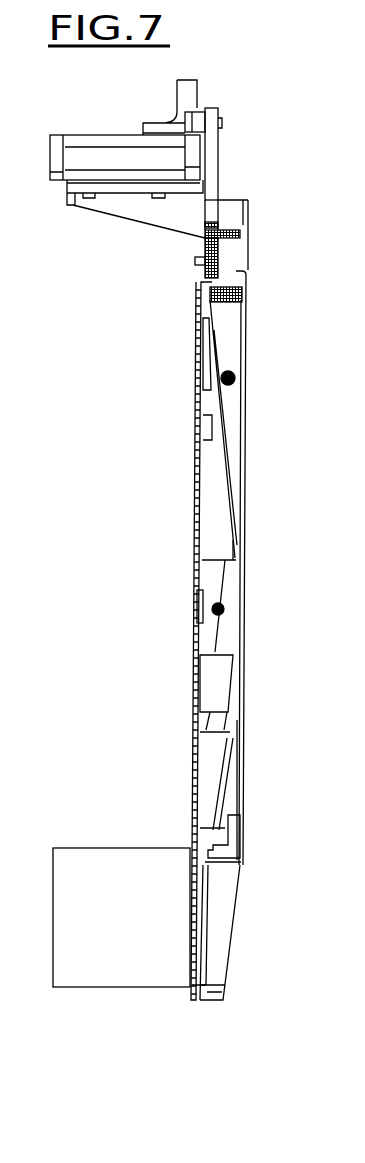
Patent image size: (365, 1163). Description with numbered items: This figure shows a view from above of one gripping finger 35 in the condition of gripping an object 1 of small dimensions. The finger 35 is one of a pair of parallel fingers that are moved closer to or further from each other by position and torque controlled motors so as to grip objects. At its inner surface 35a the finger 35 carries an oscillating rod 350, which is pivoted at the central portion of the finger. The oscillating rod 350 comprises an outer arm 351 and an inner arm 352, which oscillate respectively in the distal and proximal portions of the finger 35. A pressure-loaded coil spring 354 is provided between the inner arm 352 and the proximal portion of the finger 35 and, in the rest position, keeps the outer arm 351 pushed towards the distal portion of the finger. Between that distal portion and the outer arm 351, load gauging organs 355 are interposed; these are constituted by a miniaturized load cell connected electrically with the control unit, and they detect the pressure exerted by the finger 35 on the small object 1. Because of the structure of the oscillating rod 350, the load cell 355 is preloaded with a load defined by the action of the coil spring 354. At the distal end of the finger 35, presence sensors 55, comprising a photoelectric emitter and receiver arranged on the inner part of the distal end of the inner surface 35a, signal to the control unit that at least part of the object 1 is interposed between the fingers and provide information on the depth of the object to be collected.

The object 1 is at (103, 868).
The gripping finger 35 is at (147, 505).
The inner surface 35a is at (197, 677).
The oscillating rod 350 is at (215, 462).
The outer arm 351 is at (210, 752).
The inner arm 352 is at (208, 347).
The coil spring 354 is at (223, 285).
The load gauging organs 355 is at (233, 835).
The presence sensors 55 is at (228, 988).